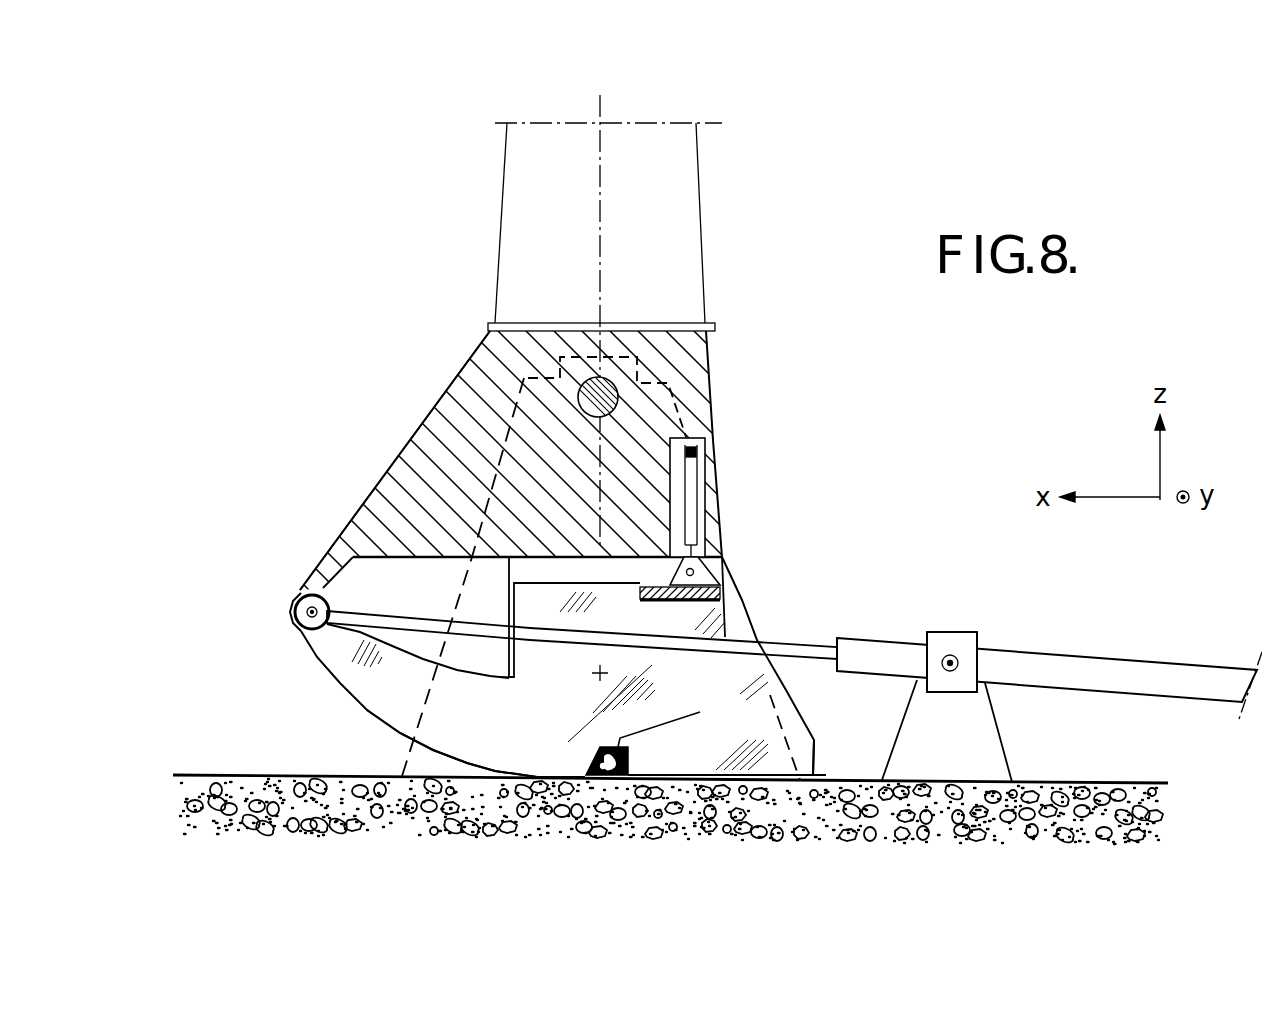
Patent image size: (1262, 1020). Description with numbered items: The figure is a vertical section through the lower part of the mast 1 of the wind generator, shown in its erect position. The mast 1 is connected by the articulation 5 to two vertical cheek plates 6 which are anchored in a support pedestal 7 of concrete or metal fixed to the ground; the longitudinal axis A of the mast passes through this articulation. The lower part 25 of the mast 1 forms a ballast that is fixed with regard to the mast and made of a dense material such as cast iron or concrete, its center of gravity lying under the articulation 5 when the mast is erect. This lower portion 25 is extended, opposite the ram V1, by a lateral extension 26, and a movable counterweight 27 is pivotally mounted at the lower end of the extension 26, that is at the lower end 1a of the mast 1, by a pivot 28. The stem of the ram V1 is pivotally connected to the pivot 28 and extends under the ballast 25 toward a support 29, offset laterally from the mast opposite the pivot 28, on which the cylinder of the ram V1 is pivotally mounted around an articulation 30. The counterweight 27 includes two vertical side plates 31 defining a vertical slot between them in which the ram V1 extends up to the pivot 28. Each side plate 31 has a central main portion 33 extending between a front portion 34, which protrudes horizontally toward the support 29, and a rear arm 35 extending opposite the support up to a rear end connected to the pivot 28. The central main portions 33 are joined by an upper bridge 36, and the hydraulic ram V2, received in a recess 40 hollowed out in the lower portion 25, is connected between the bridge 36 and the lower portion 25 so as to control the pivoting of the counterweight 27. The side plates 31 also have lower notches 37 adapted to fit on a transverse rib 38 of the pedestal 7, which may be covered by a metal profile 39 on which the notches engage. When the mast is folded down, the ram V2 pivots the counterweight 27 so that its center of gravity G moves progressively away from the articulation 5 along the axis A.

The mast 1 is at (665, 212).
The lower end of the mast 1a is at (310, 556).
The articulation 5 is at (616, 395).
The vertical cheek plates 6 is at (433, 762).
The support pedestal 7 is at (222, 774).
The lower part of the mast 25 is at (700, 413).
The lateral extension 26 is at (467, 432).
The counterweight 27 is at (732, 604).
The pivot 28 is at (300, 607).
The support 29 is at (973, 739).
The articulation 30 is at (948, 658).
The vertical side plates 31 is at (818, 755).
The central main portion 33 is at (683, 664).
The front portion 34 is at (798, 740).
The rear arm 35 is at (380, 680).
The upper bridge 36 is at (720, 588).
The lower notches 37 is at (700, 712).
The transverse rib 38 is at (617, 779).
The metal profile 39 is at (598, 779).
The recess 40 is at (707, 451).
The longitudinal axis A is at (600, 110).
The center of gravity G is at (597, 671).
The ram V1 is at (1167, 657).
The hydraulic ram V2 is at (692, 498).